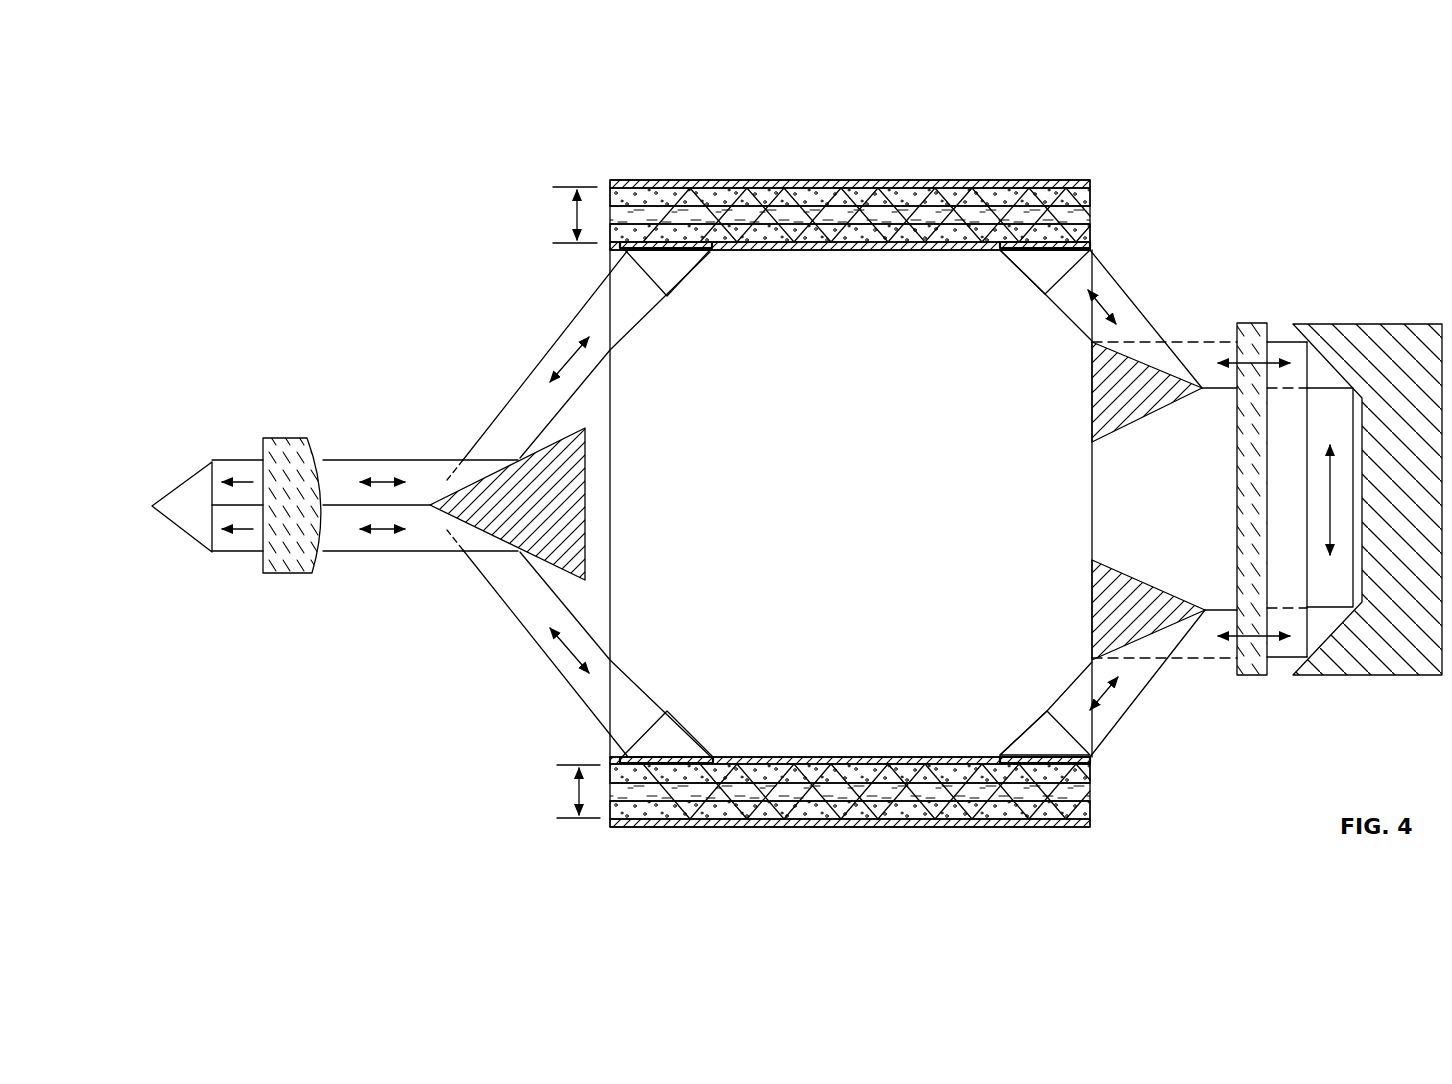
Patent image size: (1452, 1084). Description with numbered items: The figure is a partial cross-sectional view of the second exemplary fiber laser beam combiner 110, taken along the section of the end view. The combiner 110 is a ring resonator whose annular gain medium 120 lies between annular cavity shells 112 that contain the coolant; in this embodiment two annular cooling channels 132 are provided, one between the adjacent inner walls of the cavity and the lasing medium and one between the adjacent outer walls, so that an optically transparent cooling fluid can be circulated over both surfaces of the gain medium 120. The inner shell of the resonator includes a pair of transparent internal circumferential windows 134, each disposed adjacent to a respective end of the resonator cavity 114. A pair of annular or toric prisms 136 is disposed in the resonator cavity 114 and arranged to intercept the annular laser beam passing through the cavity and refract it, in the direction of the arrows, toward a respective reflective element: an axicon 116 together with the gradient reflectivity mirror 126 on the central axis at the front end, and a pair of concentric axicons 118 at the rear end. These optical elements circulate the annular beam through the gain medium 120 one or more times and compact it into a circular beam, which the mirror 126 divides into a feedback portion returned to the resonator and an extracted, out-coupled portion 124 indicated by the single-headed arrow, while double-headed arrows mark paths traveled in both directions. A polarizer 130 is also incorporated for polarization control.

The fiber laser beam combiner 110 is at (1250, 150).
The annular cavity shell 112 is at (886, 182).
The resonator cavity 114 is at (574, 215).
The axicon 116 is at (588, 496).
The concentric axicons 118 is at (1387, 333).
The gain medium 120 is at (982, 216).
The out-coupled portion 124 is at (238, 543).
The gradient reflectivity mirror 126 is at (293, 445).
The polarizer 130 is at (1253, 677).
The annular cooling channel 132 is at (715, 192).
The transparent internal circumferential window 134 is at (675, 262).
The toric prism 136 is at (624, 258).